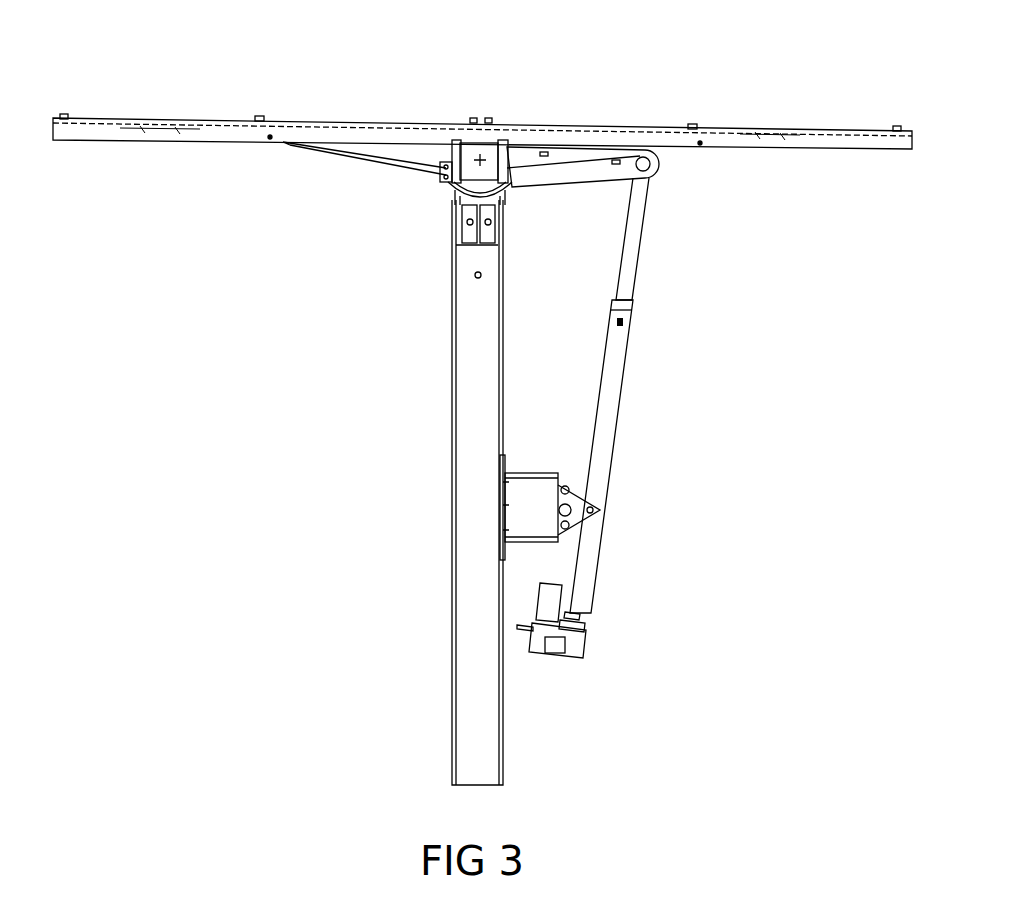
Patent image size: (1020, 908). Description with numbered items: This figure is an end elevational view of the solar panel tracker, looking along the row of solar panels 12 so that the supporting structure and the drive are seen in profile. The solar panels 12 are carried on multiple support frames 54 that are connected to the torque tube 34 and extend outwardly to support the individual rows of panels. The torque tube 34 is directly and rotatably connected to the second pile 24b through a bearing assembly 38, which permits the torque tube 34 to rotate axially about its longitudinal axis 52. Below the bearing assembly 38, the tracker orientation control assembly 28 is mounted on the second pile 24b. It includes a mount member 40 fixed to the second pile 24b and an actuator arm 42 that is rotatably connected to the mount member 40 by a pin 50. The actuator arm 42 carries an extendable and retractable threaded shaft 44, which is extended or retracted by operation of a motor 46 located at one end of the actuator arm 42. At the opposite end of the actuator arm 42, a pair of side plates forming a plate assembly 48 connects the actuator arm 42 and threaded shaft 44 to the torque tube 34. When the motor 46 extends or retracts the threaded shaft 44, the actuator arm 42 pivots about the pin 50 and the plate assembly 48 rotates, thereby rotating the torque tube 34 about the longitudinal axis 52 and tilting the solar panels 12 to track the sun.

The solar panels 12 is at (400, 125).
The bearing assembly 38 is at (525, 140).
The plate assembly 48 is at (605, 145).
The support frames 54 is at (360, 158).
The first torque tube 34 is at (426, 172).
The longitudinal axis 52 is at (458, 200).
The threaded shaft 44 is at (633, 247).
The actuator arm 42 is at (608, 385).
The tracker orientation control assembly 28 is at (660, 447).
The pin 50 is at (600, 512).
The mount member 40 is at (530, 510).
The motor 46 is at (590, 622).
The second pile 24b is at (476, 735).